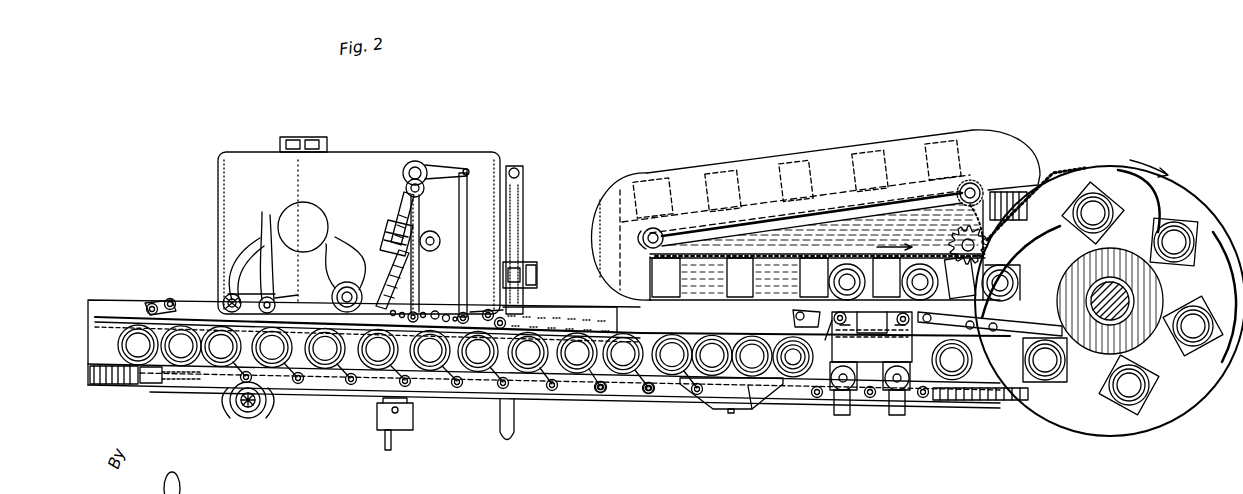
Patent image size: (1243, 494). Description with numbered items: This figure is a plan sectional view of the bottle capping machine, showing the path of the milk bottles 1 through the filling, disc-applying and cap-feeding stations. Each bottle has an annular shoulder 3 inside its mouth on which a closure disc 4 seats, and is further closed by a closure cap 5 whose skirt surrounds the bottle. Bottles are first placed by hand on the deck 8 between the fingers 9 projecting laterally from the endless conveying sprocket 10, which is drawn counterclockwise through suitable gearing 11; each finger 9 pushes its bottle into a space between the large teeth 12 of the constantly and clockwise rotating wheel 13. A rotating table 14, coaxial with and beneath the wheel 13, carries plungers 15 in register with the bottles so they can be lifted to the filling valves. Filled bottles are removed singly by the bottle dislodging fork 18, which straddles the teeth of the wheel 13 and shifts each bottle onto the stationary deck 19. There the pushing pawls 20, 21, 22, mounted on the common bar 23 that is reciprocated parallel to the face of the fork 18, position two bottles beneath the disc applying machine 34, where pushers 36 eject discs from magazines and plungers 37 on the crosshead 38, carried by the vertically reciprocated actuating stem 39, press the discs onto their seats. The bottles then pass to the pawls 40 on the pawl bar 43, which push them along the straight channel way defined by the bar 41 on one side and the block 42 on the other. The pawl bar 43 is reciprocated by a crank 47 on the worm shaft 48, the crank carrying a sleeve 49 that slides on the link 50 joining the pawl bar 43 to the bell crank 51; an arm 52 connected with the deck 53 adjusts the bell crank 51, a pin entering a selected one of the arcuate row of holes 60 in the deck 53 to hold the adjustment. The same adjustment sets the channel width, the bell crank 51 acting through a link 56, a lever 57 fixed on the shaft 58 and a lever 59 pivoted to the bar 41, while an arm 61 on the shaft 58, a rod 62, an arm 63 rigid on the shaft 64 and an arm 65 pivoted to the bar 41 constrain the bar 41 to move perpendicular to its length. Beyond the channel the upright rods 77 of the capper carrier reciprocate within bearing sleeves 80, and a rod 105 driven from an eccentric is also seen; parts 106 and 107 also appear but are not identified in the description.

The milk bottle 1 is at (130, 349).
The annular shoulder 3 is at (170, 383).
The closure disc 4 is at (787, 352).
The closure cap 5 is at (217, 352).
The deck 8 is at (627, 305).
The fingers 9 is at (780, 152).
The endless conveying sprocket 10 is at (717, 259).
The gearing 11 is at (958, 243).
The large teeth 12 is at (990, 240).
The wheel 13 is at (1140, 232).
The rotating table 14 is at (1147, 432).
The plungers 15 is at (1027, 267).
The bottle dislodging fork 18 is at (990, 338).
The stationary deck 19 is at (970, 402).
The pushing pawl 20 is at (830, 384).
The pushing pawl 21 is at (873, 385).
The pushing pawl 22 is at (907, 392).
The common bar 23 is at (773, 398).
The disc applying machine 34 is at (872, 337).
The pushers 36 is at (840, 415).
The plungers 37 is at (815, 397).
The crosshead 38 is at (835, 332).
The actuating stem 39 is at (847, 265).
The pawl 40 is at (650, 372).
The bar 41 is at (112, 318).
The block 42 is at (708, 395).
The pawl bar 43 is at (610, 390).
The crank 47 is at (422, 238).
The shaft 48 is at (440, 240).
The sleeve 49 is at (398, 233).
The link 50 is at (398, 254).
The bell crank 51 is at (401, 177).
The arm 52 is at (410, 272).
The deck 53 is at (570, 320).
The link 56 is at (465, 185).
The lever 57 is at (483, 288).
The shaft 58 is at (503, 322).
The lever 59 is at (473, 312).
The arcuate row of holes 60 is at (446, 318).
The arm 61 is at (510, 320).
The rod 62 is at (298, 330).
The arm 63 is at (180, 308).
The shaft 64 is at (172, 303).
The arm 65 is at (158, 303).
The upright rods 77 is at (262, 445).
The bearing sleeves 80 is at (283, 428).
The rod 105 is at (265, 300).
The curved link 106 is at (233, 262).
The lever pivot 107 is at (236, 292).